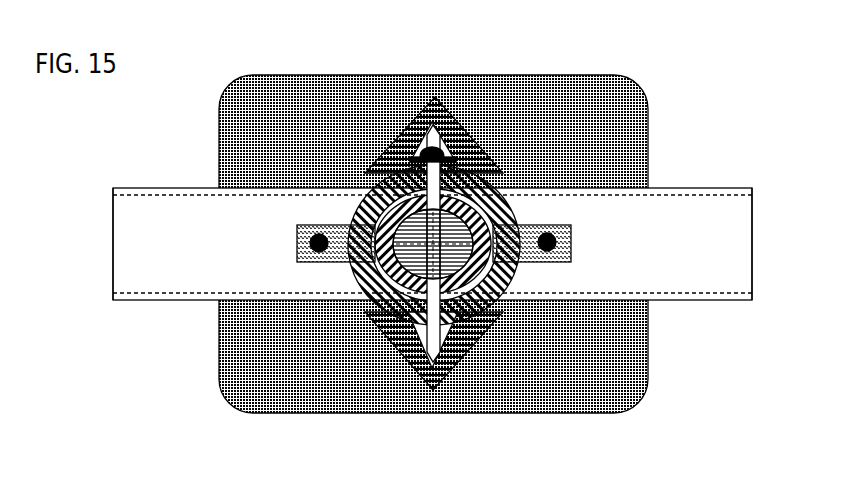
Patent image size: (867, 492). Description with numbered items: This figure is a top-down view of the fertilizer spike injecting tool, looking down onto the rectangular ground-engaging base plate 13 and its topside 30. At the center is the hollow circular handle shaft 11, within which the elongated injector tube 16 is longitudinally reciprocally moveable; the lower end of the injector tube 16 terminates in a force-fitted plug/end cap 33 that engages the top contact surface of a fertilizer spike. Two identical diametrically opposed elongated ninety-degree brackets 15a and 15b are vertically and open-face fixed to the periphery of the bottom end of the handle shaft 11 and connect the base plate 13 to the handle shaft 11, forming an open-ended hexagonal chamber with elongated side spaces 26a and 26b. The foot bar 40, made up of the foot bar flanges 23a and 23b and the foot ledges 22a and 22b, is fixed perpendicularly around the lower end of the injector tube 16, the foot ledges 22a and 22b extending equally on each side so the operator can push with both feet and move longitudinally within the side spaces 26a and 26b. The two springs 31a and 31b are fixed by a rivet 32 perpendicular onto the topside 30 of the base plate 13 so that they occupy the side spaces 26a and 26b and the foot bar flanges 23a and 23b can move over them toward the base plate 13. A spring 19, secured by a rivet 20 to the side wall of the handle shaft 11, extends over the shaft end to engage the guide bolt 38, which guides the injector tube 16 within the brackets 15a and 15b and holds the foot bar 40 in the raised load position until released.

The base plate 13 is at (355, 68).
The foot bar 40 is at (773, 272).
The foot bar flange 23a is at (105, 192).
The foot bar flange 23b is at (761, 193).
The foot ledge 22a is at (153, 250).
The foot ledge 22b is at (719, 235).
The spring 31a is at (337, 225).
The rivet 32 is at (317, 225).
The spring 31b is at (530, 225).
The topside of base plate 30 is at (550, 226).
The spring 19 is at (460, 143).
The elongated bracket 15a is at (443, 383).
The handle shaft 11 is at (343, 268).
The injector tube 16 is at (381, 281).
The guide bolt 38 is at (430, 120).
The plug/end cap 33 is at (410, 272).
The rivet 20 is at (455, 152).
The elongated bracket 15b is at (412, 153).
The elongated side space 26a is at (355, 322).
The elongated side space 26b is at (513, 321).